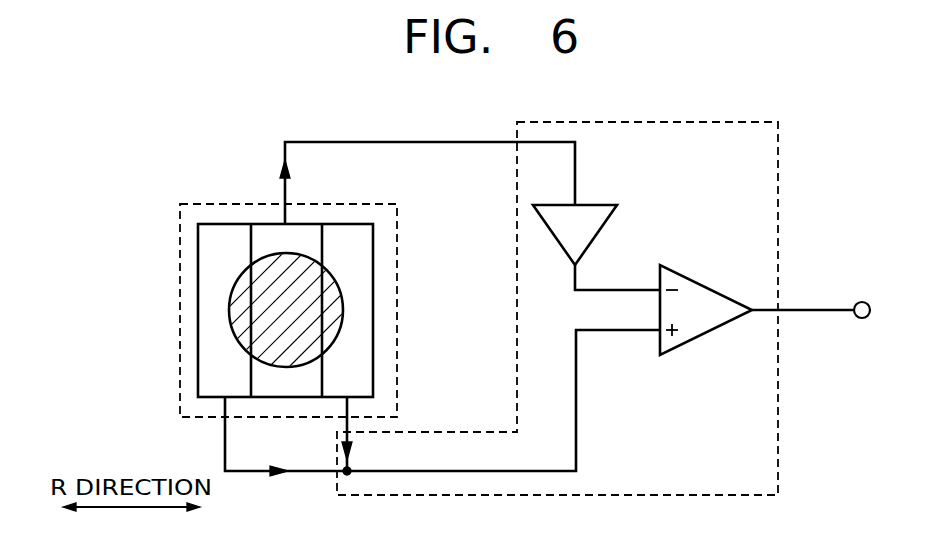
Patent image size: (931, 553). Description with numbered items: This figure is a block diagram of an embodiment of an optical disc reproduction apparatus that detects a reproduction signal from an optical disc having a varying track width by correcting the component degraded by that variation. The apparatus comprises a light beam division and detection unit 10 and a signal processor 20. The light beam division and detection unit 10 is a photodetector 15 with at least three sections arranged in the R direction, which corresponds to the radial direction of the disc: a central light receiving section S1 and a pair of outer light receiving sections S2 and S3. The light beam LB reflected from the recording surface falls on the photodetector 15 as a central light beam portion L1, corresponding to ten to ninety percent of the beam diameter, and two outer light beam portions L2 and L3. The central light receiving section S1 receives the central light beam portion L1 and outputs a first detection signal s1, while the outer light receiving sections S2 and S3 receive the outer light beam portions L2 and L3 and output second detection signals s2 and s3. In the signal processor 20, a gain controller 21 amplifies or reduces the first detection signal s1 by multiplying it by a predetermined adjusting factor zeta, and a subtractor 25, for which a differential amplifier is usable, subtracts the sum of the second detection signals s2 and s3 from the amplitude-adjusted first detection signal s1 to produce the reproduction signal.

The light beam division and detection unit 10 is at (212, 204).
The photodetector 15 is at (190, 236).
The signal processor 20 is at (517, 295).
The gain controller 21 is at (600, 205).
The subtractor 25 is at (702, 282).
The light beam LB is at (229, 300).
The central light beam portion L1 is at (285, 311).
The outer light beam portion L2 is at (332, 316).
The outer light beam portion L3 is at (238, 322).
The central light receiving section S1 is at (282, 239).
The outer light receiving section S2 is at (351, 239).
The outer light receiving section S3 is at (219, 239).
The first detection signal s1 is at (427, 183).
The second detection signal s2 is at (365, 436).
The second detection signal s3 is at (286, 453).